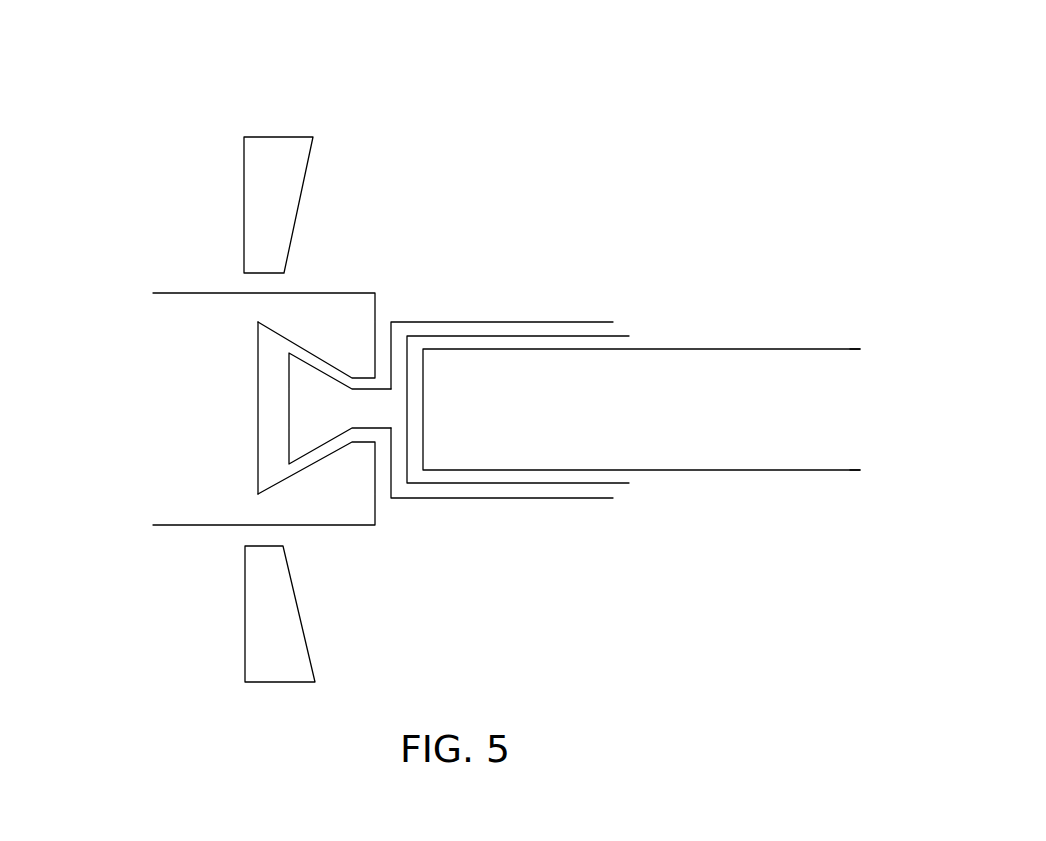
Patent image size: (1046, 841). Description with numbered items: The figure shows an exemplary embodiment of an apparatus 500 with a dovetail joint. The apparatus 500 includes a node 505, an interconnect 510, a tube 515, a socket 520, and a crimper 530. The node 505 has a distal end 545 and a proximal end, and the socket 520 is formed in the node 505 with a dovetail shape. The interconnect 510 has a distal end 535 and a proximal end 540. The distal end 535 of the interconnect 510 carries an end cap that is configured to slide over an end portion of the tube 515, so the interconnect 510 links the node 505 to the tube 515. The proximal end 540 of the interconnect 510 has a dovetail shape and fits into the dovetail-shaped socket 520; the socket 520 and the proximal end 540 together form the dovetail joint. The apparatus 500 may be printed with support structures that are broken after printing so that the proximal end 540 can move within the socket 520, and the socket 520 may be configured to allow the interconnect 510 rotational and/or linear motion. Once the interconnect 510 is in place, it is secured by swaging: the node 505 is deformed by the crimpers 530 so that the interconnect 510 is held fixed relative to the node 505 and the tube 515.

The apparatus 500 is at (682, 172).
The node 505 is at (357, 307).
The interconnect 510 is at (320, 413).
The tube 515 is at (797, 448).
The socket 520 is at (270, 482).
The crimper 530 is at (272, 210).
The distal end 535 is at (470, 318).
The proximal end 540 is at (265, 355).
The distal end 545 is at (858, 453).